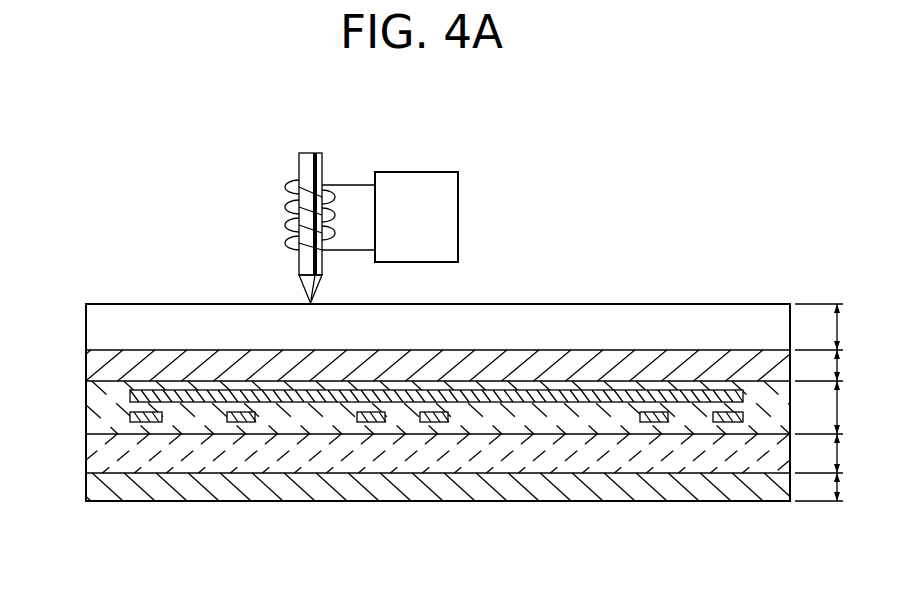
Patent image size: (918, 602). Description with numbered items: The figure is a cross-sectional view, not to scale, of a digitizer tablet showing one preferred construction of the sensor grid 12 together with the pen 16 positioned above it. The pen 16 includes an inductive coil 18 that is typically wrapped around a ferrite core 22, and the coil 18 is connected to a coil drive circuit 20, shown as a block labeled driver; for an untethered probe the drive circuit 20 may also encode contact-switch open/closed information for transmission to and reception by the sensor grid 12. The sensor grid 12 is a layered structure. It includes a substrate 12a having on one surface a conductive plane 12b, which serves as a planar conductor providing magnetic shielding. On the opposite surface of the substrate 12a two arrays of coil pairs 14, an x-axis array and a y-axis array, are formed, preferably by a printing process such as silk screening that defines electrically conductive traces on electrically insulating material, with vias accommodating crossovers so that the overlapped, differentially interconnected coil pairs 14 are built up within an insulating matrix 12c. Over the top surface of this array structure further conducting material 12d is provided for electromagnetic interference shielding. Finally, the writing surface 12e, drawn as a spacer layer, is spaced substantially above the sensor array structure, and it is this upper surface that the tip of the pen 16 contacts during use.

The sensor grid 12 is at (433, 418).
The substrate 12a is at (85, 457).
The conductive plane 12b is at (86, 487).
The insulating matrix 12c is at (85, 403).
The conducting material 12d is at (85, 358).
The writing surface 12e is at (698, 303).
The coil pairs 14 is at (187, 402).
The pen 16 is at (285, 203).
The inductive coil 18 is at (287, 210).
The coil drive circuit 20 is at (458, 200).
The ferrite core 22 is at (320, 158).